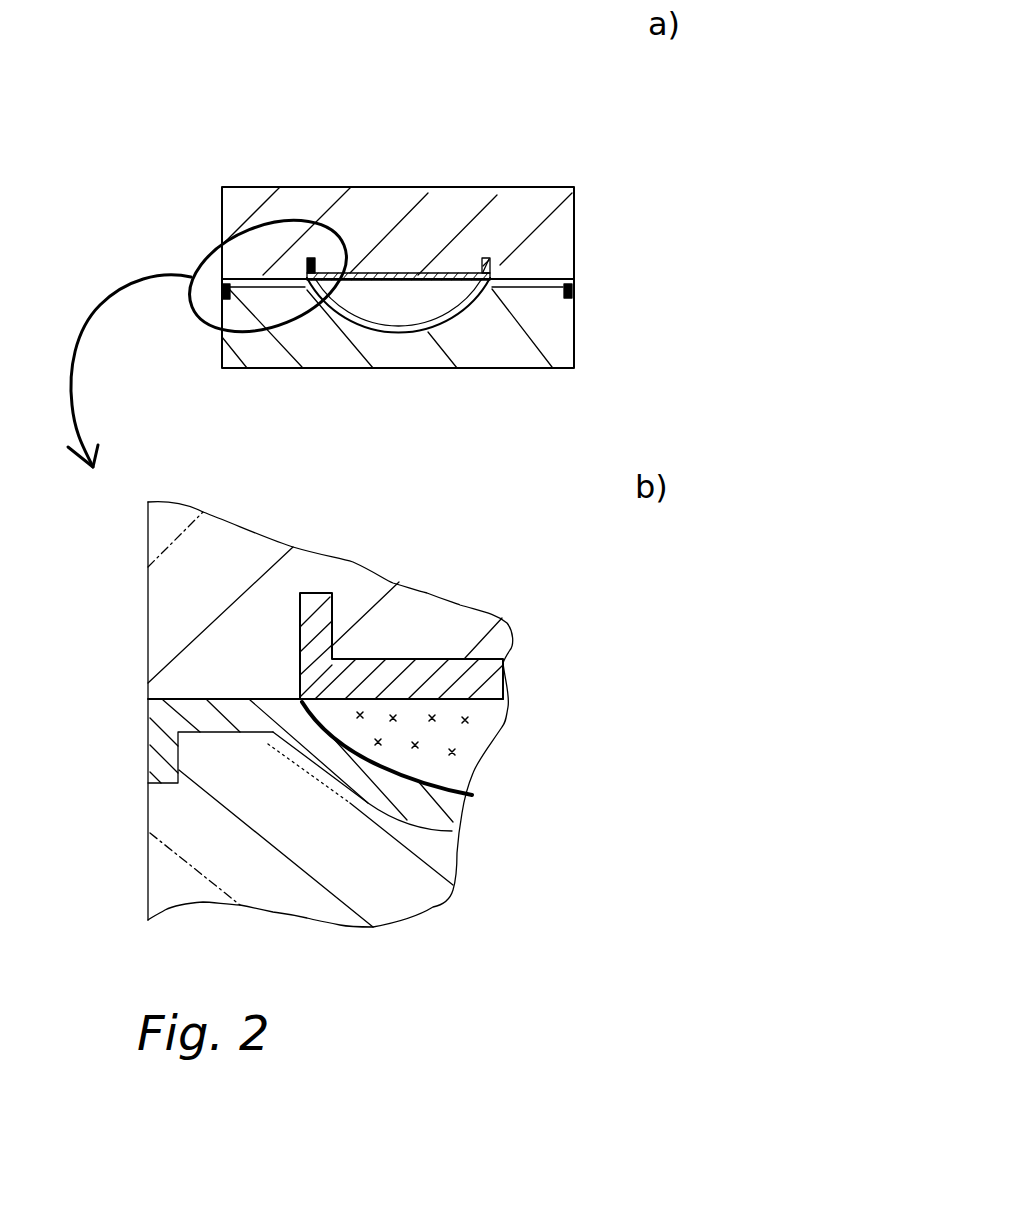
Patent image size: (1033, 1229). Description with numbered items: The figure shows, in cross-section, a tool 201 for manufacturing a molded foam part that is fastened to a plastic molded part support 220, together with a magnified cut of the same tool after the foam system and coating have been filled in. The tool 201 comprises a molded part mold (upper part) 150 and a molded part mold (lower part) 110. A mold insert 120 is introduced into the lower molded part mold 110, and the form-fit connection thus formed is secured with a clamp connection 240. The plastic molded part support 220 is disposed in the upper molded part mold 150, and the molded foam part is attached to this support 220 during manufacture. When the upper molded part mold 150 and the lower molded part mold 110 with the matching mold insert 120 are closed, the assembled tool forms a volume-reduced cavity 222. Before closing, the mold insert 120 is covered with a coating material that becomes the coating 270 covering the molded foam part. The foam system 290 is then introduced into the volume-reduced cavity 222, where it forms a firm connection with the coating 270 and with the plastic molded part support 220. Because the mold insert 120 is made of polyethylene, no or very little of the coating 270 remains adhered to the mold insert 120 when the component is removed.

In FIG. 2a, the molded part mold (lower part) 110 is at (322, 343).
In FIG. 2b, the molded part mold (lower part) 110 is at (375, 875).
In FIG. 2a, the mold insert 120 is at (223, 288).
In FIG. 2b, the mold insert 120 is at (455, 807).
In FIG. 2a, the molded part mold (upper part) 150 is at (455, 215).
In FIG. 2b, the molded part mold (upper part) 150 is at (213, 562).
In FIG. 2a, the tool 201 is at (613, 253).
In FIG. 2a, the plastic molded part support 220 is at (373, 270).
In FIG. 2b, the plastic molded part support 220 is at (338, 587).
In FIG. 2a, the volume-reduced cavity 222 is at (393, 297).
In FIG. 2a, the clamp connection 240 is at (223, 298).
In FIG. 2b, the clamp connection 240 is at (163, 758).
In FIG. 2b, the coating 270 is at (470, 787).
In FIG. 2b, the foam system 290 is at (468, 735).